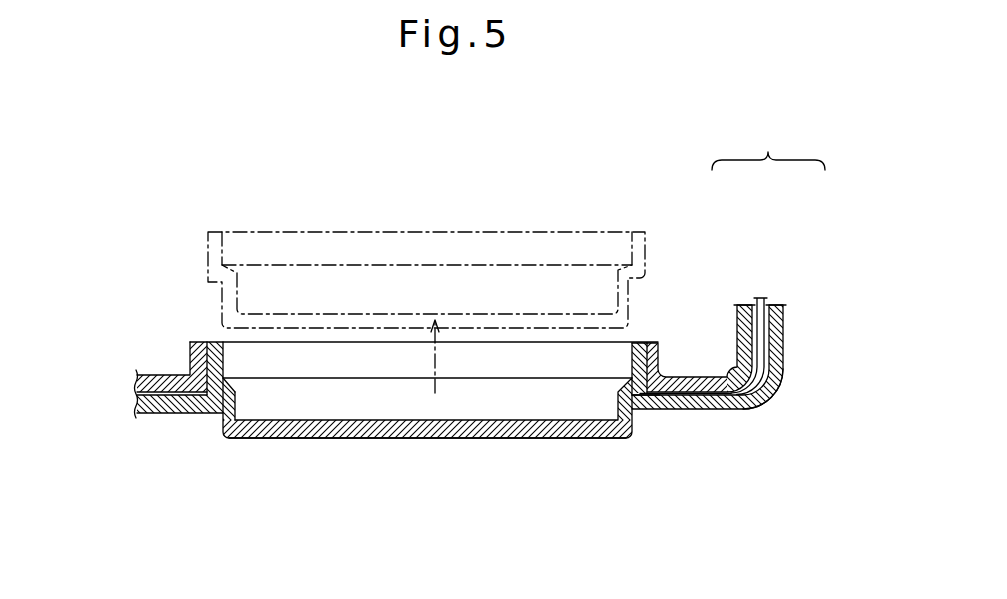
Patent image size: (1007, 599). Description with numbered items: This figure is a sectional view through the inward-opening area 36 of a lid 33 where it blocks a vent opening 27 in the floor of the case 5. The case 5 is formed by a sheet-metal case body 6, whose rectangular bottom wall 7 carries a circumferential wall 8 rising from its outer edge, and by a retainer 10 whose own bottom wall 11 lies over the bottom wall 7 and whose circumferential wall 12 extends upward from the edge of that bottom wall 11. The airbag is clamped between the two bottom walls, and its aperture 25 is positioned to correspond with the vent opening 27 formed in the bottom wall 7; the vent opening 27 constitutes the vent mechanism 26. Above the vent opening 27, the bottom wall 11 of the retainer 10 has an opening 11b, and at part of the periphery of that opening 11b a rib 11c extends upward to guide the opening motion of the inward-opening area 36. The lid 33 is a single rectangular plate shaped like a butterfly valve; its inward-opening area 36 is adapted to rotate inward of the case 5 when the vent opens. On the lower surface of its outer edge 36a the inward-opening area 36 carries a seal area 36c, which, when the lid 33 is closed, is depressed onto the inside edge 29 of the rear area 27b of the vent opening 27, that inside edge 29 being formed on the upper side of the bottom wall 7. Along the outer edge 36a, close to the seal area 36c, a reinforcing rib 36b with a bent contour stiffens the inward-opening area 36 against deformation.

The case 5 is at (768, 144).
The case body 6 is at (775, 306).
The bottom wall 7 is at (719, 409).
The circumferential wall 8 is at (784, 356).
The retainer 10 is at (751, 304).
The bottom wall 11 is at (697, 379).
The opening 11b is at (645, 362).
The rib 11c is at (198, 358).
The circumferential wall 12 is at (733, 310).
The aperture 25 is at (648, 405).
The vent mechanism 26 is at (283, 477).
The vent opening 27 is at (226, 410).
The rear area 27b is at (229, 385).
The inside edge 29 is at (640, 405).
The lid 33 is at (452, 441).
The inward-opening area 36 is at (347, 438).
The outer edge 36a is at (222, 218).
The reinforcing rib 36b is at (237, 275).
The seal area 36c is at (205, 307).